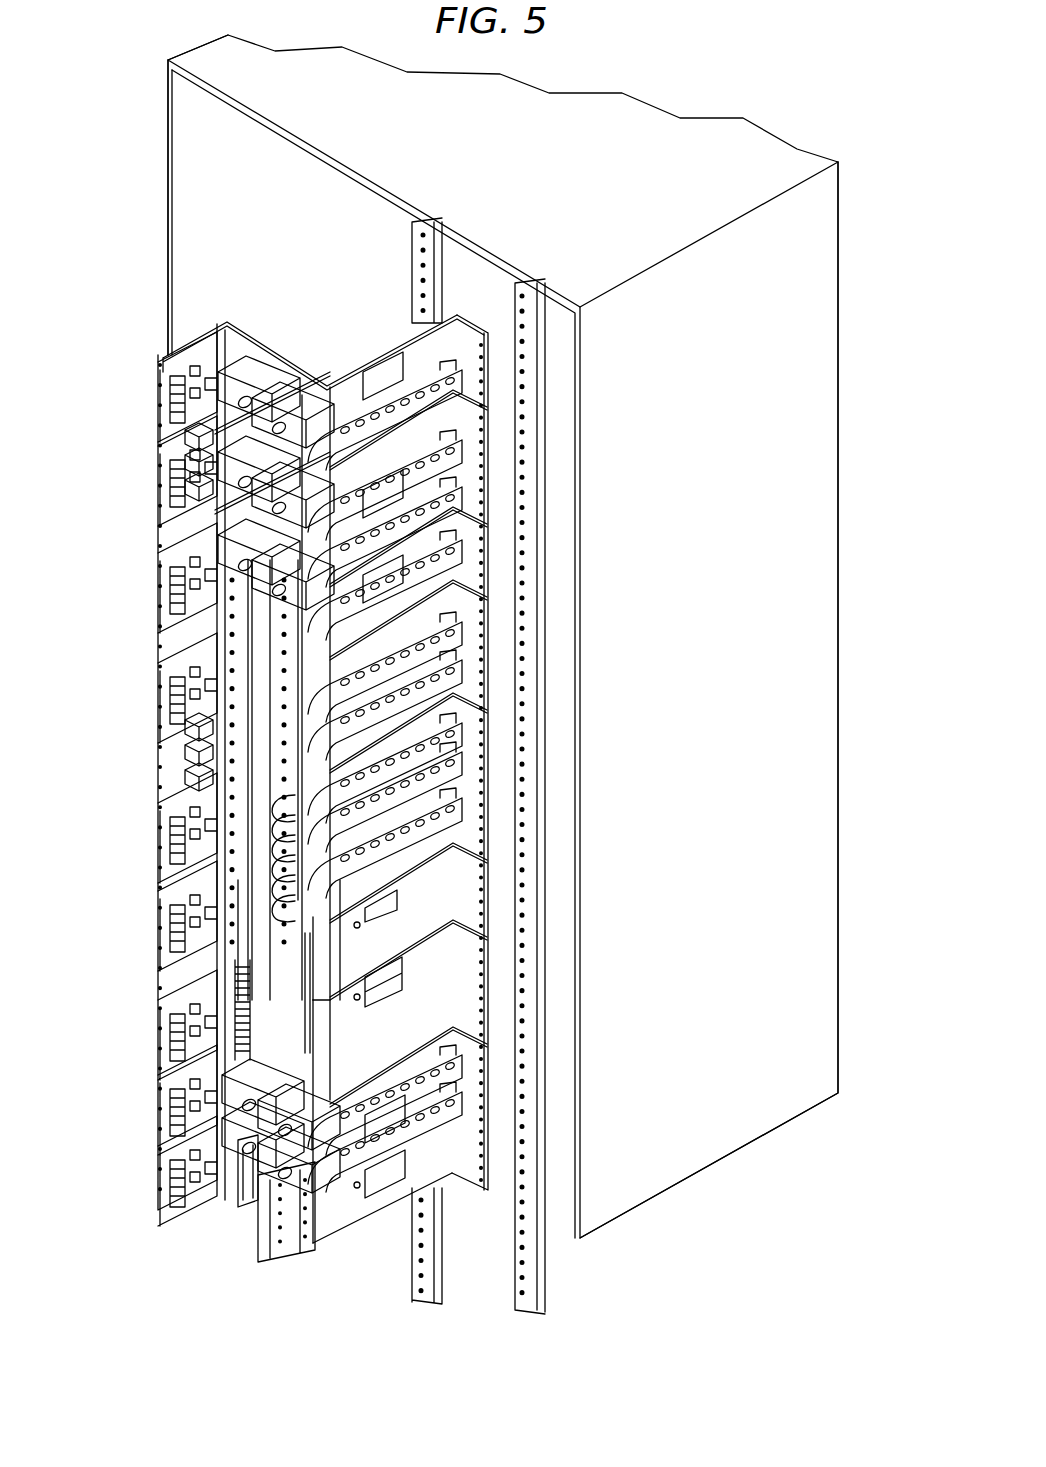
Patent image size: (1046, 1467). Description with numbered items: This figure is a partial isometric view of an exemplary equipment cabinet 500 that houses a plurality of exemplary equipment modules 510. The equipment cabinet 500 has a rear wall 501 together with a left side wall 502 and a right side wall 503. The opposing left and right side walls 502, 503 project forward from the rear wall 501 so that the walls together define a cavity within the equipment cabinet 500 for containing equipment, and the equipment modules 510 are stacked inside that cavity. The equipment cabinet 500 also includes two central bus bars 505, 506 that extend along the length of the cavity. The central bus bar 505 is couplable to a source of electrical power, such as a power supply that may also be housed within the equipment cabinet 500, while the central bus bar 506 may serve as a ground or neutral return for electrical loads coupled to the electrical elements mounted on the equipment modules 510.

The equipment cabinet 500 is at (680, 86).
The rear wall 501 is at (478, 283).
The left side wall 502 is at (182, 196).
The right side wall 503 is at (812, 310).
The central bus bar 505 is at (416, 232).
The central bus bar 506 is at (543, 340).
The equipment modules 510 is at (157, 373).